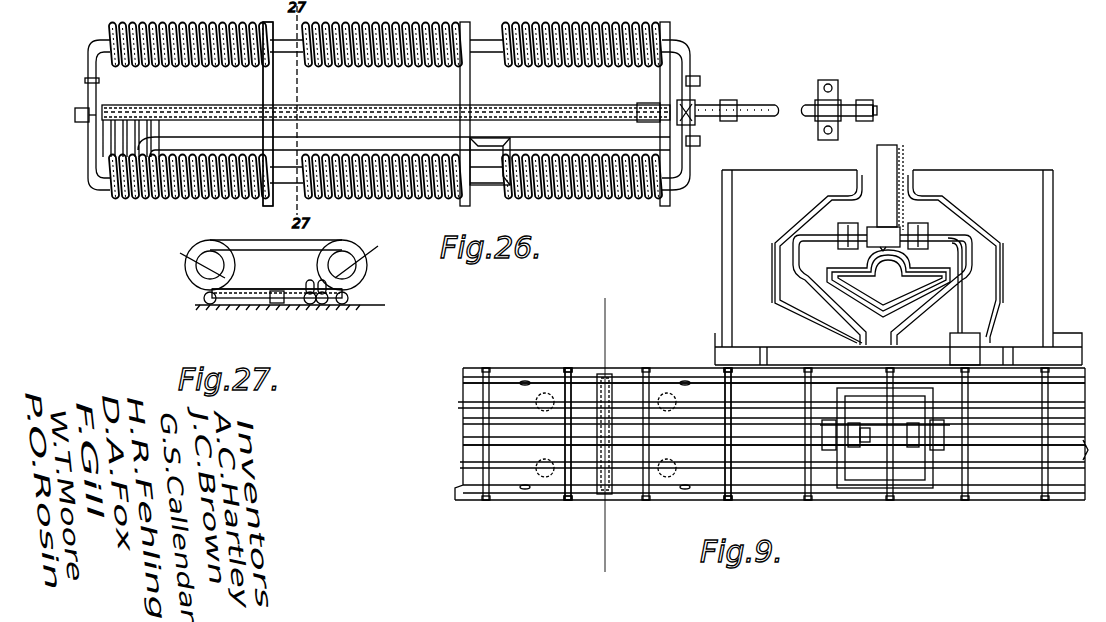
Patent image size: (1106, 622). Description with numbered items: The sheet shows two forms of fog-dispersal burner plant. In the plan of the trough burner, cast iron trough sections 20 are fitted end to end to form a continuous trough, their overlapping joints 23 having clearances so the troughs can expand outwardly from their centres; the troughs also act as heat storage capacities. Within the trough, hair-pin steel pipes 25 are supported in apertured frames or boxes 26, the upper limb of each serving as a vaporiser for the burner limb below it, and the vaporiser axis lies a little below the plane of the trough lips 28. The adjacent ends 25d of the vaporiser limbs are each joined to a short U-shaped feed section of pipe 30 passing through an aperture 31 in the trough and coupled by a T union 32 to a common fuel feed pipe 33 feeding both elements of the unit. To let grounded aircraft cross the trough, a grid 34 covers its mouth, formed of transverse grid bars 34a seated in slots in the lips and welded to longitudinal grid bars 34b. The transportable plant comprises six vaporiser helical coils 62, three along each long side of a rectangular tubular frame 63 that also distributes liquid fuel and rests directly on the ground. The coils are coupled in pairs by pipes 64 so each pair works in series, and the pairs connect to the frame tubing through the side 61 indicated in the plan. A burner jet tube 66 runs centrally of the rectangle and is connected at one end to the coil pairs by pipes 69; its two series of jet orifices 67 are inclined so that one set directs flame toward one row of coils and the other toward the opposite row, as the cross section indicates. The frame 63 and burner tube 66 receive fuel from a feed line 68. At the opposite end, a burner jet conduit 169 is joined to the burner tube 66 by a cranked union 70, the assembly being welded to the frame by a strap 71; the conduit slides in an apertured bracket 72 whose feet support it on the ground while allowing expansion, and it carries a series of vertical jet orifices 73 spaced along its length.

In FIG. 9, the cast iron trough section 20 is at (543, 393).
In FIG. 9, the joint 23 is at (610, 494).
In FIG. 9, the steel pipe 25 is at (527, 430).
In FIG. 9, the adjacent end of vaporiser pipe limb 25d is at (850, 436).
In FIG. 9, the frame or box 26 is at (858, 480).
In FIG. 9, the lip 28 is at (590, 380).
In FIG. 9, the U-shaped feed section of pipe 30 is at (897, 340).
In FIG. 9, the aperture 31 is at (862, 348).
In FIG. 9, the T union 32 is at (928, 306).
In FIG. 9, the fuel feed pipe 33 is at (897, 158).
In FIG. 9, the grid 34 is at (795, 465).
In FIG. 9, the transverse grid bar 34a is at (566, 478).
In FIG. 9, the longitudinal grid bar 34b is at (470, 405).
In FIG. 26, the end plate 61 is at (273, 87).
In FIG. 26, the vaporiser helical coil 62 is at (170, 27).
In FIG. 27, the vaporiser helical coil 62 is at (210, 248).
In FIG. 26, the rectangular tubular frame 63 is at (90, 140).
In FIG. 27, the rectangular tubular frame 63 is at (240, 302).
In FIG. 26, the pipe 64 is at (470, 87).
In FIG. 27, the pipe 64 is at (255, 248).
In FIG. 26, the burner jet tube 66 is at (232, 107).
In FIG. 27, the burner jet tube 66 is at (277, 290).
In FIG. 26, the jet orifice 67 is at (200, 105).
In FIG. 27, the jet orifice 67 is at (258, 290).
In FIG. 26, the feed line 68 is at (76, 111).
In FIG. 26, the pipe 69 is at (110, 145).
In FIG. 27, the pipe 69 is at (314, 306).
In FIG. 26, the cranked union 70 is at (648, 122).
In FIG. 26, the strap 71 is at (690, 104).
In FIG. 26, the apertured bracket 72 is at (836, 106).
In FIG. 26, the vertical jet orifice 73 is at (735, 105).
In FIG. 26, the burner jet conduit 169 is at (762, 106).